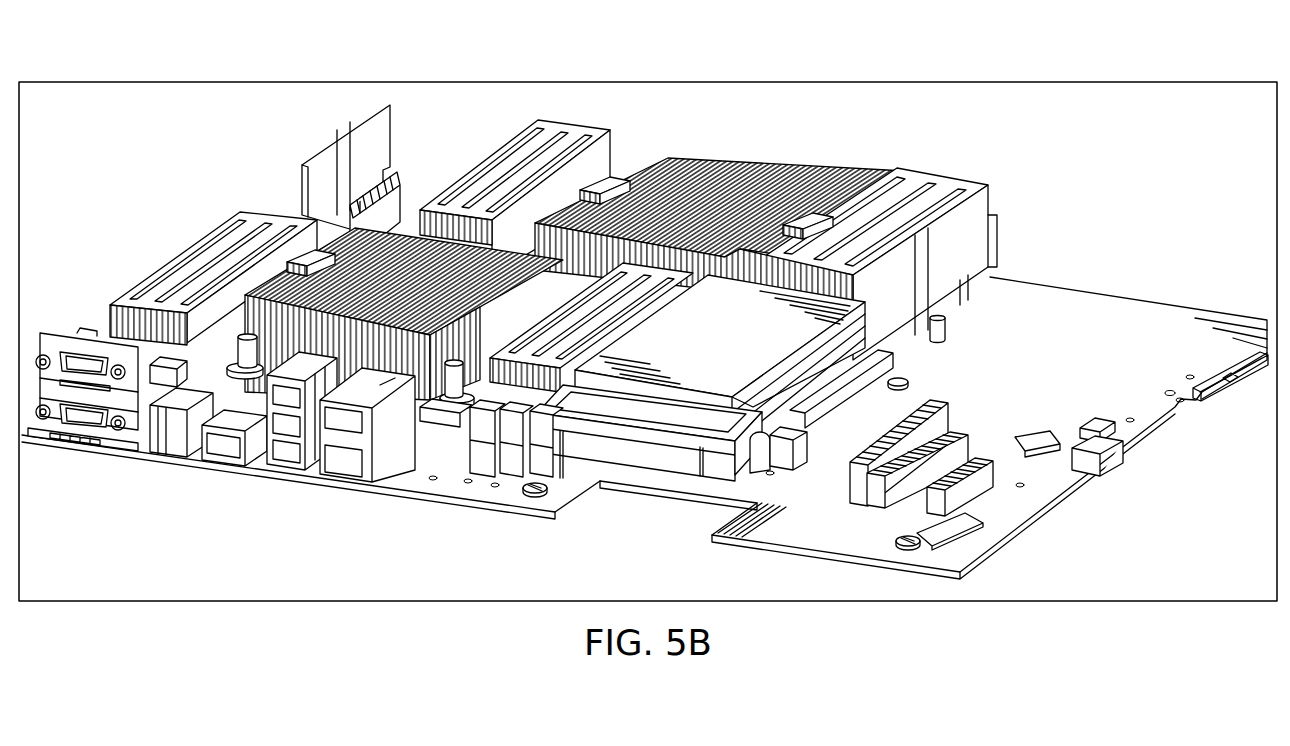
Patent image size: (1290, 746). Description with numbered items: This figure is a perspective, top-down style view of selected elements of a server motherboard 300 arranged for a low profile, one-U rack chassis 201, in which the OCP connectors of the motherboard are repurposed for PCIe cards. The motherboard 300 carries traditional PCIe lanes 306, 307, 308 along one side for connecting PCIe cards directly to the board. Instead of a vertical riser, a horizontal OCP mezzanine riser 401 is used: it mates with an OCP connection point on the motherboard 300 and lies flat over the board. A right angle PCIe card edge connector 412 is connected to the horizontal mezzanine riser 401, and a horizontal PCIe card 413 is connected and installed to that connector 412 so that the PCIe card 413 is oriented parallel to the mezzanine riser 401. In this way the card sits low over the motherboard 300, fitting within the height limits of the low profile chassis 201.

The low profile rack chassis 201 is at (300, 71).
The server motherboard 300 is at (1052, 498).
The PCIe lane 306 is at (968, 463).
The PCIe lane 307 is at (936, 430).
The PCIe lane 308 is at (914, 400).
The horizontal OCP mezzanine riser 401 is at (733, 468).
The right angle PCIe card edge connector 412 is at (784, 458).
The horizontal PCIe card 413 is at (738, 352).